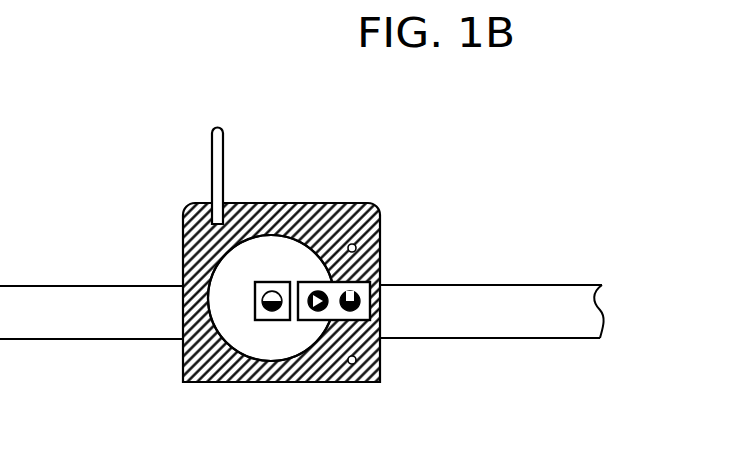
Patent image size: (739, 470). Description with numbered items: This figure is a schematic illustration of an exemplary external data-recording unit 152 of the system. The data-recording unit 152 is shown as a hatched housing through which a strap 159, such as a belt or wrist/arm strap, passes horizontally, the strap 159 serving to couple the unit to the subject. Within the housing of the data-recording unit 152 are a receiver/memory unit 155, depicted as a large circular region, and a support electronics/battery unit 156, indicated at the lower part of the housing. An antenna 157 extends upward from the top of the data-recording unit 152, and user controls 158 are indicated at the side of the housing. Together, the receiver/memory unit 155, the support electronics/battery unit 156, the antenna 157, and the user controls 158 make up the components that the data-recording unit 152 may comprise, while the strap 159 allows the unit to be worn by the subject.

The external data-recording unit 152 is at (148, 202).
The receiver/memory unit 155 is at (243, 345).
The support electronics/battery unit 156 is at (322, 367).
The antenna 157 is at (221, 130).
The user controls 158 is at (380, 242).
The strap 159 is at (522, 292).